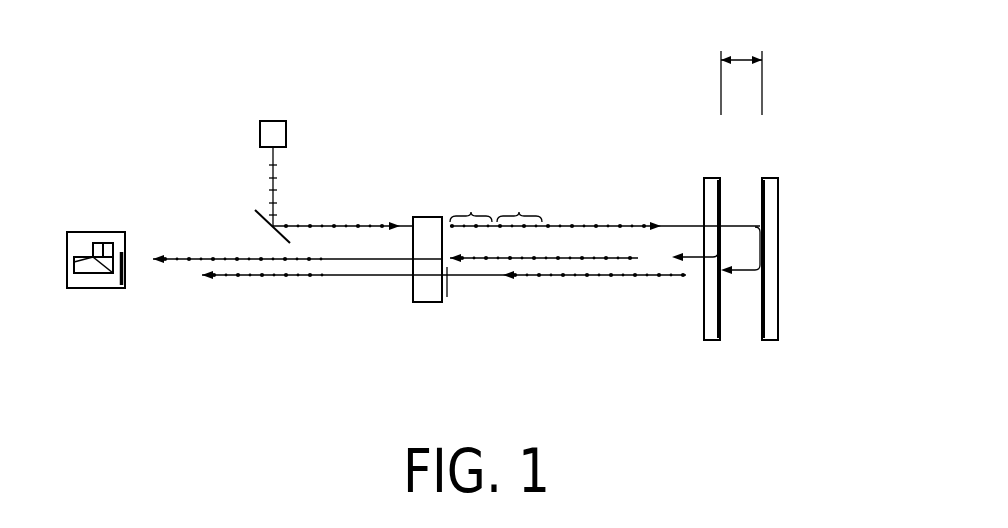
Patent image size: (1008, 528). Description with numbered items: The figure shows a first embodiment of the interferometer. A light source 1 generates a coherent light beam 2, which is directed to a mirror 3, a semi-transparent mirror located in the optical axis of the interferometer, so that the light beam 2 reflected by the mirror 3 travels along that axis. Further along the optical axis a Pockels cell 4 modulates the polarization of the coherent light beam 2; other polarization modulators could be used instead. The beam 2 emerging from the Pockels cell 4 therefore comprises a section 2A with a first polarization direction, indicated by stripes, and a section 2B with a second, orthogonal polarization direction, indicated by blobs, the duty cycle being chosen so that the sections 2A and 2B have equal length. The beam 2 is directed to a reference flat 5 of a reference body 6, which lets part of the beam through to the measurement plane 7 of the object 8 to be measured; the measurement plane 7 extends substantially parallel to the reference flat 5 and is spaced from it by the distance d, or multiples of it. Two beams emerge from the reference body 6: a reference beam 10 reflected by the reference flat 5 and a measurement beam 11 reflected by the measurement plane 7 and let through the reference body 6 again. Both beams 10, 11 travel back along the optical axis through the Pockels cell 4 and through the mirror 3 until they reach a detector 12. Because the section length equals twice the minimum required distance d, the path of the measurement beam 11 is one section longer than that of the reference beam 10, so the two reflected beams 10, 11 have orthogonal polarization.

The light source 1 is at (260, 127).
The coherent light beam 2 is at (273, 182).
The section with first polarization direction 2A is at (471, 212).
The section with second polarization direction 2B is at (519, 212).
The mirror 3 is at (257, 212).
The Pockels cell 4 is at (423, 228).
The reference flat 5 is at (726, 192).
The reference body 6 is at (713, 335).
The measurement plane 7 is at (756, 185).
The object to be measured 8 is at (770, 330).
The reference beam 10 is at (675, 259).
The measurement beam 11 is at (382, 274).
The detector 12 is at (123, 279).
The distance d is at (741, 71).